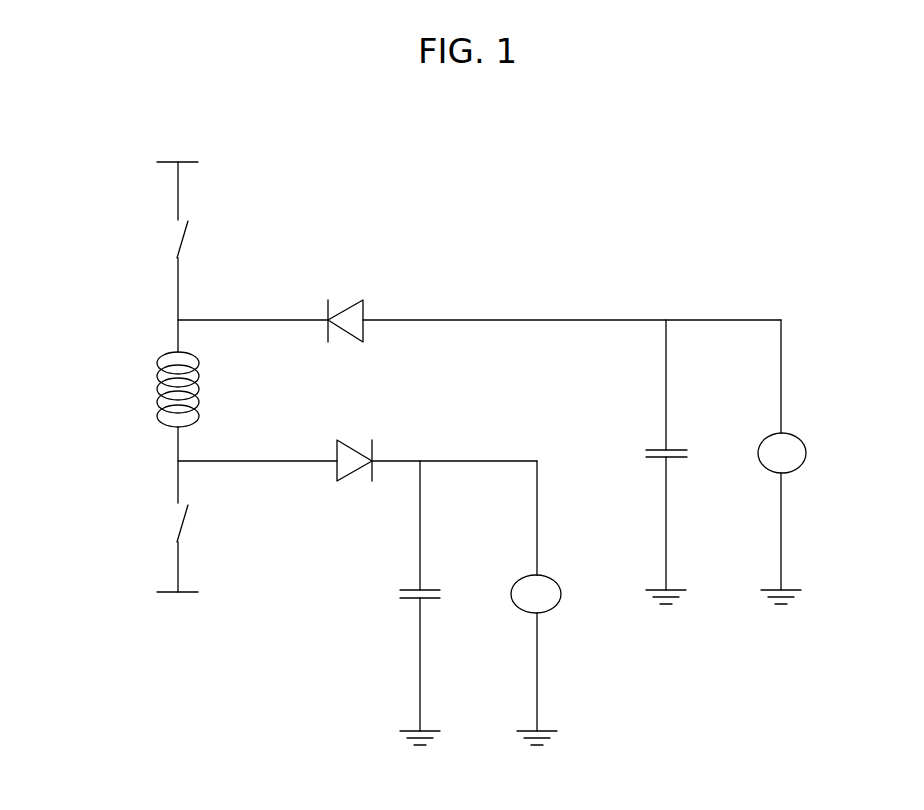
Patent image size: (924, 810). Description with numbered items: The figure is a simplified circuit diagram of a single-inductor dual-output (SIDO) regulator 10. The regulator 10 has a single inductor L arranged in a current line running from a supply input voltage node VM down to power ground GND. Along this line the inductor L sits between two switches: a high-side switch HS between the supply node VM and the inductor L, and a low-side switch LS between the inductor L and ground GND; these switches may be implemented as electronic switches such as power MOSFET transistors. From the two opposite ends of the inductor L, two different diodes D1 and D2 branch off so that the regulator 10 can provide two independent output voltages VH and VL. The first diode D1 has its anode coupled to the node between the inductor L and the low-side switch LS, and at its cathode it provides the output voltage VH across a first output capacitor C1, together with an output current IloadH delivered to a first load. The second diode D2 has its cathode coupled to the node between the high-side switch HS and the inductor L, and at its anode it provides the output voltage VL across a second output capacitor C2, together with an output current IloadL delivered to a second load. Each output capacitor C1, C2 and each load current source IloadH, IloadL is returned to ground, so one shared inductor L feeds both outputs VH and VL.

The single-inductor dual-output regulator 10 is at (503, 268).
The supply input voltage node VM is at (177, 148).
The high-side switch HS is at (177, 236).
The inductor L is at (157, 400).
The low-side switch LS is at (178, 520).
The ground GND is at (175, 610).
The second diode D2 is at (347, 298).
The first diode D1 is at (357, 478).
The first output voltage VH is at (420, 461).
The second output voltage VL is at (666, 320).
The first output capacitor C1 is at (408, 597).
The second output capacitor C2 is at (653, 447).
The first output current IloadH is at (549, 601).
The second output current IloadL is at (798, 452).